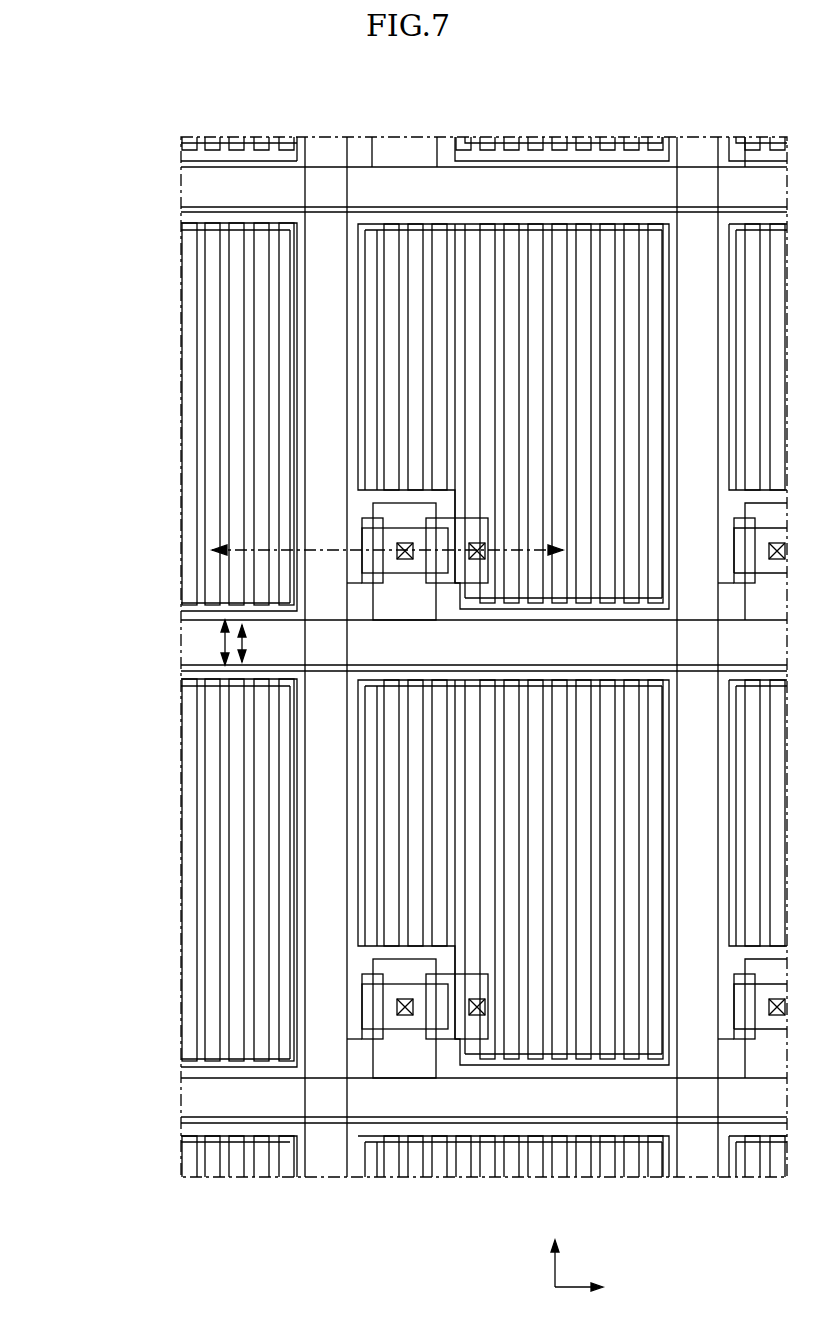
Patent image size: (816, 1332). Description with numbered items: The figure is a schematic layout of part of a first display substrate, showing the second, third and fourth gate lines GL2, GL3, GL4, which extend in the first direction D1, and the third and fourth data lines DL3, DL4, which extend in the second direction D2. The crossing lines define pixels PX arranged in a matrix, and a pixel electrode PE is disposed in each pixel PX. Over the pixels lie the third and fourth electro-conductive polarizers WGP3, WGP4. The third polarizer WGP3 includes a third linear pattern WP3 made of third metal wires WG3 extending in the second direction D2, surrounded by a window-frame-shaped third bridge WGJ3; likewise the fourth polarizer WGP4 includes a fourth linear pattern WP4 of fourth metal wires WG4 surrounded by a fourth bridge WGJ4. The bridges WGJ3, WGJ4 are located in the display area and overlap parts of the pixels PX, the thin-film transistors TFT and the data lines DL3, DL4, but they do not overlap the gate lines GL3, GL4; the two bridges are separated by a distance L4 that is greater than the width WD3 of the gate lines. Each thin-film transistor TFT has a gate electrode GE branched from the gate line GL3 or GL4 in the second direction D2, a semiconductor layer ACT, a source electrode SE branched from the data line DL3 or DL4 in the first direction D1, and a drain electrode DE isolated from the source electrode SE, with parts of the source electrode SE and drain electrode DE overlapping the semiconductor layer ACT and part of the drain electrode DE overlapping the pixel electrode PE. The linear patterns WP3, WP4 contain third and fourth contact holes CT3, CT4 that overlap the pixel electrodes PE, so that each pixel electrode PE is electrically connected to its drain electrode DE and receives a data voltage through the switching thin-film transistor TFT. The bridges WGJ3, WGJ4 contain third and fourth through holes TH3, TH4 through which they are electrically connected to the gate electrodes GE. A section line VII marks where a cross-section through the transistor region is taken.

The second gate line GL2 is at (181, 186).
The third gate line GL3 is at (181, 645).
The fourth gate line GL4 is at (181, 1099).
The third data line DL3 is at (325, 1168).
The fourth data line DL4 is at (697, 1168).
The pixel electrode PE is at (631, 600).
The pixel PX is at (676, 274).
The third metal wires WG3 is at (571, 238).
The fourth metal wires WG4 is at (200, 861).
The third electro-conductive polarizer WGP3 is at (107, 385).
The fourth electro-conductive polarizer WGP4 is at (107, 852).
The third bridge WGJ3 is at (302, 294).
The fourth bridge WGJ4 is at (302, 762).
The third linear pattern WP3 is at (346, 312).
The fourth linear pattern WP4 is at (346, 779).
The gate electrode GE is at (397, 503).
The source electrode SE is at (370, 518).
The drain electrode DE is at (448, 585).
The semiconductor layer ACT is at (362, 560).
The thin-film transistor TFT is at (430, 597).
The third through hole TH3 is at (403, 562).
The fourth through hole TH4 is at (403, 1018).
The third contact hole CT3 is at (486, 551).
The fourth contact hole CT4 is at (486, 1007).
The distance L4 is at (212, 642).
The width WD3 is at (264, 643).
The section line VII is at (384, 539).
The first direction D1 is at (595, 1287).
The second direction D2 is at (555, 1249).